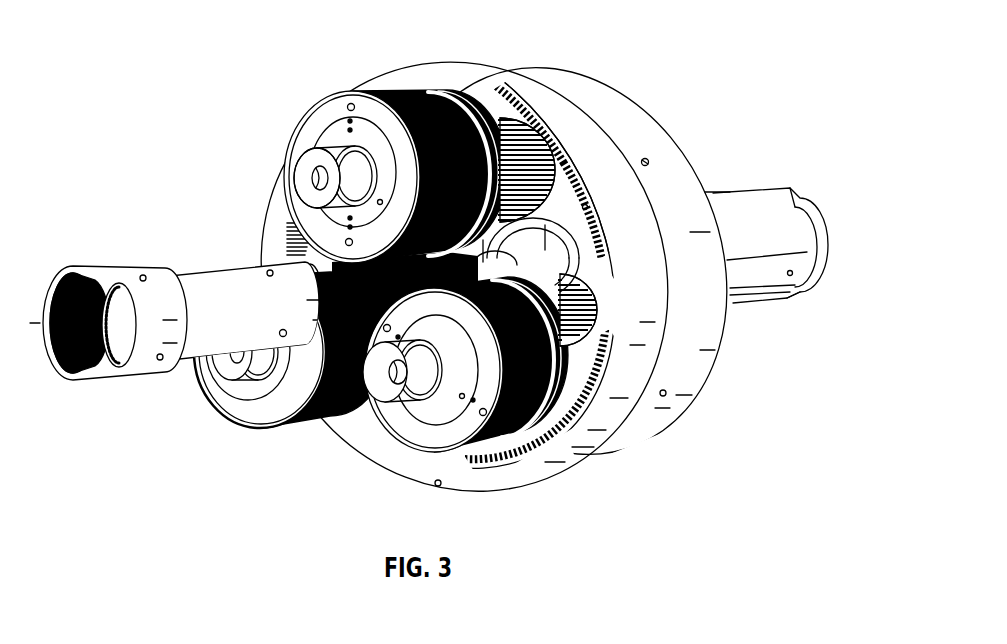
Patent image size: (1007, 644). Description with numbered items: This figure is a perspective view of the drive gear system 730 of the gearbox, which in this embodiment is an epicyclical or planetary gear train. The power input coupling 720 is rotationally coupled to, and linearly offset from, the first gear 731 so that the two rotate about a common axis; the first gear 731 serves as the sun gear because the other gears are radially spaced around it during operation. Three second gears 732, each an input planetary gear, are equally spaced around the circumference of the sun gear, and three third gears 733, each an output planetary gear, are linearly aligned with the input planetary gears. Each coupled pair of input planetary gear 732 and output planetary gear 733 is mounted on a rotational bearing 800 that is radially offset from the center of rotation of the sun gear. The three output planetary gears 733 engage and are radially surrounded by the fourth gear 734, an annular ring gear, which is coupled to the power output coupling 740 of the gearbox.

The drive gear system 730 is at (644, 36).
The first gear 731 is at (287, 230).
The second gear 732 is at (342, 90).
The third gear 733 is at (513, 132).
The fourth gear 734 is at (590, 312).
The power output coupling 740 is at (808, 284).
The power input coupling 720 is at (115, 380).
The rotational bearing 800 is at (300, 165).